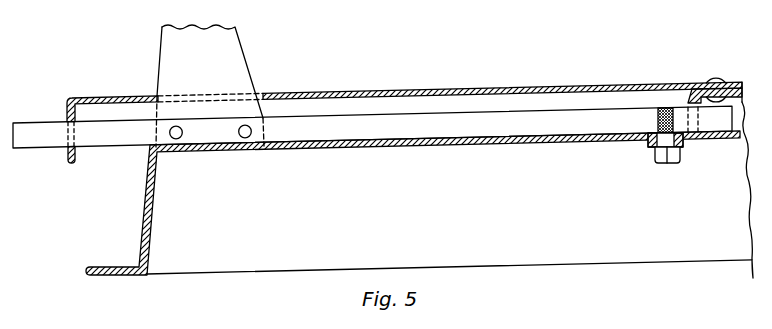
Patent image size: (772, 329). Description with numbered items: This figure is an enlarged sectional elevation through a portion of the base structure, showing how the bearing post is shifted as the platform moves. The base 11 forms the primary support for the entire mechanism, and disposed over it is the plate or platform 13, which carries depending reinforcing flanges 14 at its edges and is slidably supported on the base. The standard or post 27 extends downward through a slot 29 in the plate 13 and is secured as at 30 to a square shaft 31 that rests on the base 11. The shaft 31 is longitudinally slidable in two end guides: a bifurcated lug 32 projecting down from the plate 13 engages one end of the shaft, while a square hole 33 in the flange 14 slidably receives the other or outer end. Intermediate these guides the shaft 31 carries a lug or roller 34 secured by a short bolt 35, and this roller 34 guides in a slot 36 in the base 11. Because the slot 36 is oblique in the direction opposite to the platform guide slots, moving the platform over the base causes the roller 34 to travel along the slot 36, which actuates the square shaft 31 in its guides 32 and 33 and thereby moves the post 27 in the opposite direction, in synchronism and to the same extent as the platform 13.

The base 11 is at (600, 250).
The plate or platform 13 is at (502, 88).
The reinforcing flanges 14 is at (72, 165).
The standard or post 27 is at (228, 57).
The slot 29 is at (276, 93).
The securing means 30 is at (180, 138).
The square shaft 31 is at (445, 132).
The bifurcated lug 32 is at (692, 92).
The square hole 33 is at (66, 152).
The lug or roller 34 is at (651, 149).
The short bolt 35 is at (665, 158).
The slot 36 is at (652, 131).